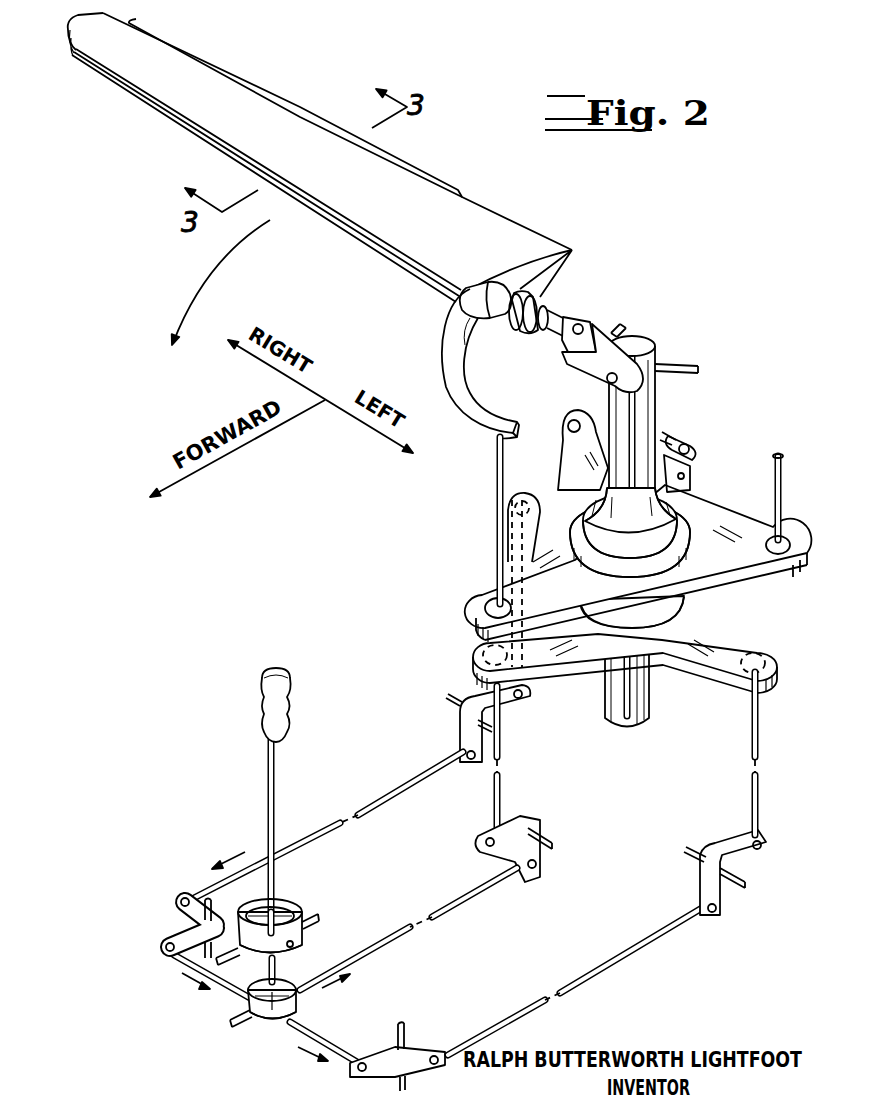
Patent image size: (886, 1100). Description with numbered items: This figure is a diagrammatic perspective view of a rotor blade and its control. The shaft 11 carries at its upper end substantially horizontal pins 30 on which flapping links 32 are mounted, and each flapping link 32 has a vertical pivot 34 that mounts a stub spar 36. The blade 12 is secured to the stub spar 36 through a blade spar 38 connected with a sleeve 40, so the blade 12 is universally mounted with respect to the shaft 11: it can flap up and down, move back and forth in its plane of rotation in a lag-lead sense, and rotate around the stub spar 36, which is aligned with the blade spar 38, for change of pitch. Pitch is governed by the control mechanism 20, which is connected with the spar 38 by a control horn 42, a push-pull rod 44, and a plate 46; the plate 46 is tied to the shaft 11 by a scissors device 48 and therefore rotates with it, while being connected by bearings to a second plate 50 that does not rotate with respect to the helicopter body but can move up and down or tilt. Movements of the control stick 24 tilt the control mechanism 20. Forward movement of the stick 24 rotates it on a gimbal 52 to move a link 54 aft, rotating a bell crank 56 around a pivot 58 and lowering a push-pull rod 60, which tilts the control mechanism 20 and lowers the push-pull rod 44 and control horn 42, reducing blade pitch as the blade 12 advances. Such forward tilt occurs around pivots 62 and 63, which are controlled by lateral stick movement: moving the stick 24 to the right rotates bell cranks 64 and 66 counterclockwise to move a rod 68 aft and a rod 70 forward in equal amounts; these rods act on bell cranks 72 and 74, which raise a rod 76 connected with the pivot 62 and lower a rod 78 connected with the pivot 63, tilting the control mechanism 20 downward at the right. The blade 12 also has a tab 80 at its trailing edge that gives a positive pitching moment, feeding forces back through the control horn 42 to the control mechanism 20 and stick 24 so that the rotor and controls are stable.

The shaft 11 is at (658, 345).
The blade 12 is at (488, 210).
The control mechanism 20 is at (712, 480).
The control stick 24 is at (286, 670).
The horizontal pins 30 is at (624, 333).
The flapping link 32 is at (598, 333).
The vertical pivot 34 is at (558, 312).
The stub spar 36 is at (548, 352).
The blade spar 38 is at (465, 300).
The sleeve 40 is at (572, 252).
The control horn 42 is at (443, 356).
The push-pull rod 44 is at (490, 483).
The plate 46 is at (737, 520).
The scissors device 48 is at (683, 442).
The second plate 50 is at (733, 628).
The gimbal 52 is at (304, 898).
The link 54 is at (478, 905).
The bell crank 56 is at (548, 852).
The pivot 58 is at (548, 836).
The push-pull rod 60 is at (485, 820).
The pivot 62 is at (742, 672).
The pivot 63 is at (512, 507).
The bell crank 64 is at (378, 1045).
The bell crank 66 is at (178, 940).
The rod 68 is at (632, 965).
The rod 70 is at (405, 785).
The bell crank 72 is at (728, 900).
The bell crank 74 is at (522, 706).
The rod 76 is at (747, 745).
The rod 78 is at (505, 558).
The tab 80 is at (278, 97).